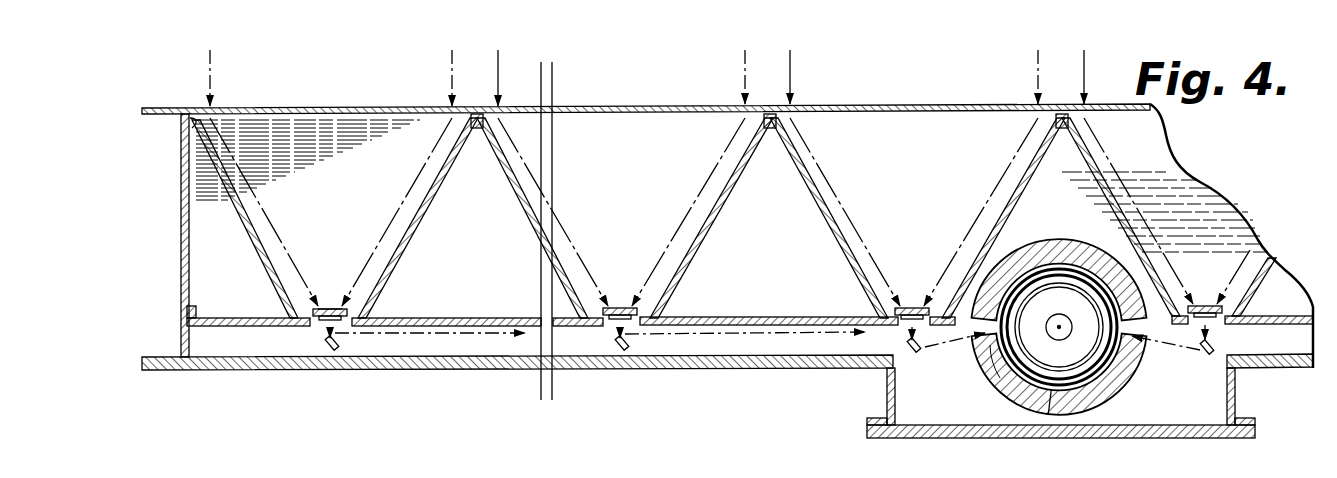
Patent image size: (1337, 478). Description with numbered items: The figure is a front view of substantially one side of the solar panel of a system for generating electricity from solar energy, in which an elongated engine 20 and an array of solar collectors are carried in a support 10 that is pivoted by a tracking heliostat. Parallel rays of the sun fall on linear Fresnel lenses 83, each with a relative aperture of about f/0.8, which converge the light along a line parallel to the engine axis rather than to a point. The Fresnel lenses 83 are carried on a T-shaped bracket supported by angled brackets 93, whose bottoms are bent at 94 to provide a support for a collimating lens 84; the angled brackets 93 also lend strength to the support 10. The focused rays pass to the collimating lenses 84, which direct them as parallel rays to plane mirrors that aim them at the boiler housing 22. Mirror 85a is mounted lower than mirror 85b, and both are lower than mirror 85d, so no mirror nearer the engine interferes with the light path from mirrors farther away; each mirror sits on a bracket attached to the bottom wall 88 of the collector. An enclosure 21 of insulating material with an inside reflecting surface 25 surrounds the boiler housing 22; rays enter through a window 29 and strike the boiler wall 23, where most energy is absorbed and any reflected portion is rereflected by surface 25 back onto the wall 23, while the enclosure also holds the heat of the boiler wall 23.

The support 10 is at (1207, 168).
The engine 20 is at (1150, 383).
The enclosure 21 is at (1100, 390).
The boiler housing 22 is at (1000, 378).
The boiler wall 23 is at (1059, 272).
The inside reflecting surface 25 is at (1043, 408).
The window 29 is at (990, 326).
The Fresnel lens 83 is at (343, 106).
The collimating lens 84 is at (345, 316).
The mirror 85a is at (918, 350).
The mirror 85b is at (628, 347).
The mirror 85d is at (325, 343).
The bottom wall 88 is at (462, 370).
The angled bracket 93 is at (237, 237).
The bent portion 94 is at (323, 306).